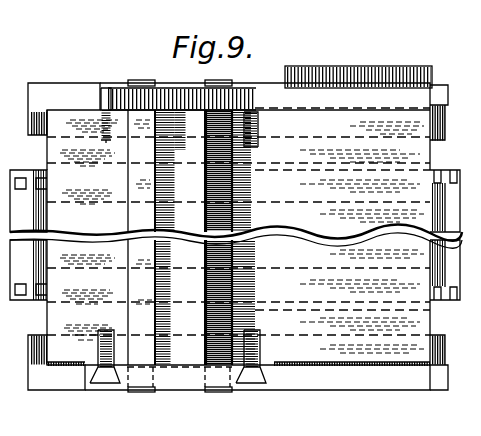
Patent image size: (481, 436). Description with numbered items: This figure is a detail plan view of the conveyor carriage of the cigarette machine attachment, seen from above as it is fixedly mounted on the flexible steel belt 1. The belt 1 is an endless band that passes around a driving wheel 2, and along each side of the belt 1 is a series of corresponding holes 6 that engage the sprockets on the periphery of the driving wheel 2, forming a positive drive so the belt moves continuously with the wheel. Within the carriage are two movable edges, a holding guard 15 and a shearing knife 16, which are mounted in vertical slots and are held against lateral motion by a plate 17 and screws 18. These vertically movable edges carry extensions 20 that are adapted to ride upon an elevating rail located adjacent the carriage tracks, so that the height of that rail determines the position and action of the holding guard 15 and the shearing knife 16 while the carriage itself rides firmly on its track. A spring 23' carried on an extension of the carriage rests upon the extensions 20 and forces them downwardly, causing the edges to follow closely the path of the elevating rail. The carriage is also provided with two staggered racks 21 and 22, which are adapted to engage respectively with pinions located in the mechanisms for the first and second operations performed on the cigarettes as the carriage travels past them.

The steel belt 1 is at (30, 298).
The driving wheel 2 is at (231, 236).
The holes 6 is at (437, 178).
The holding guard 15 is at (143, 221).
The shearing knife 16 is at (243, 223).
The plate 17 is at (92, 376).
The screws 18 is at (101, 386).
The extensions 20 is at (205, 80).
The rack 21 is at (138, 100).
The rack 22 is at (381, 70).
The spring 23' is at (50, 113).